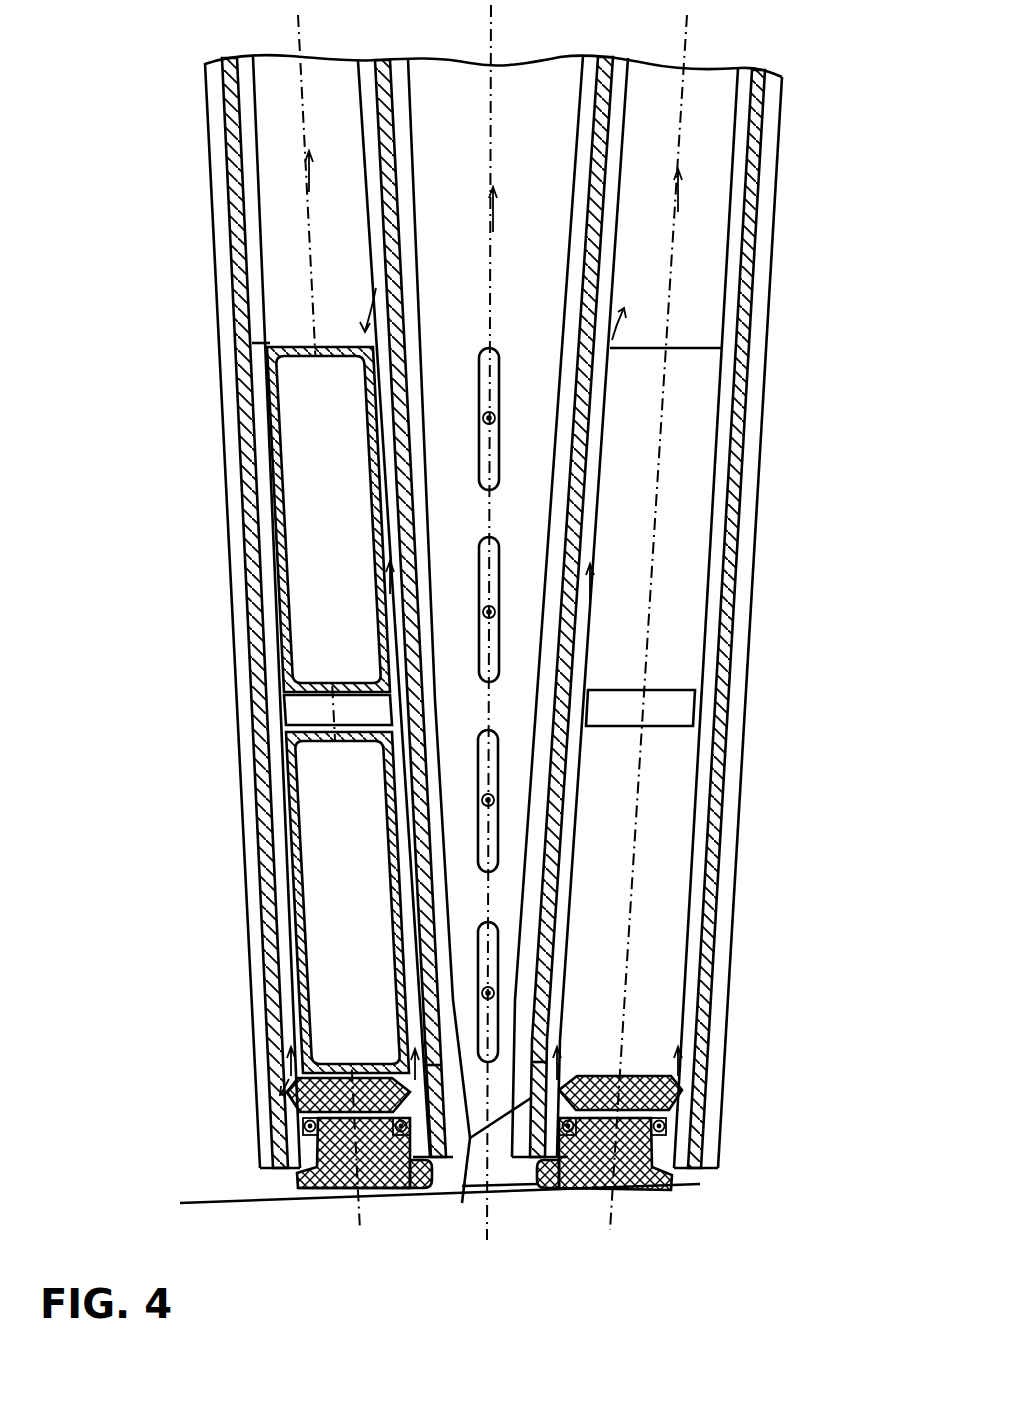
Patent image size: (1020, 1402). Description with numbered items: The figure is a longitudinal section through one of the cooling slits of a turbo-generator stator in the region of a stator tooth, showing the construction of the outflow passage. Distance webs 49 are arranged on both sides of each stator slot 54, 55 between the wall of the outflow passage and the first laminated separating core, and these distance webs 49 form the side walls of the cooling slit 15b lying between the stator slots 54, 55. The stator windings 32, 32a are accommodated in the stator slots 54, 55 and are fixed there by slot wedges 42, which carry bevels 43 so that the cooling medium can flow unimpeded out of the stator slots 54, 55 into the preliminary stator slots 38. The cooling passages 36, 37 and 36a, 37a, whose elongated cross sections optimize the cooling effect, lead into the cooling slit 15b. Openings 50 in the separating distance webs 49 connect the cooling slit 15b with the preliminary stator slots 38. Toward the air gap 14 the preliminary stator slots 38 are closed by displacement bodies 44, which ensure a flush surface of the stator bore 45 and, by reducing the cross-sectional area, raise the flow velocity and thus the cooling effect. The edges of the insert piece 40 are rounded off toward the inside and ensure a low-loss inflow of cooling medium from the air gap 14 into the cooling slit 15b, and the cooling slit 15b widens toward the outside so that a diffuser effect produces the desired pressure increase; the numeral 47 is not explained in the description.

The air gap 14 is at (684, 1254).
The cooling slit 15b is at (535, 487).
The stator winding 32 is at (320, 862).
The stator winding 32a is at (303, 489).
The cooling passage 36 is at (485, 840).
The cooling passage 36a is at (497, 377).
The cooling passage 37 is at (490, 952).
The cooling passage 37a is at (487, 572).
The preliminary stator slot 38 is at (663, 1143).
The insert piece 40 is at (425, 1187).
The slot wedge 42 is at (300, 1073).
The bevel 43 is at (295, 1097).
The displacement body 44 is at (337, 1188).
The stator bore 45 is at (233, 1197).
The outlet opening 47 is at (511, 1177).
The distance web 49 is at (808, 1018).
The opening 50 is at (478, 1137).
The stator slot 54 is at (287, 200).
The stator slot 55 is at (707, 168).